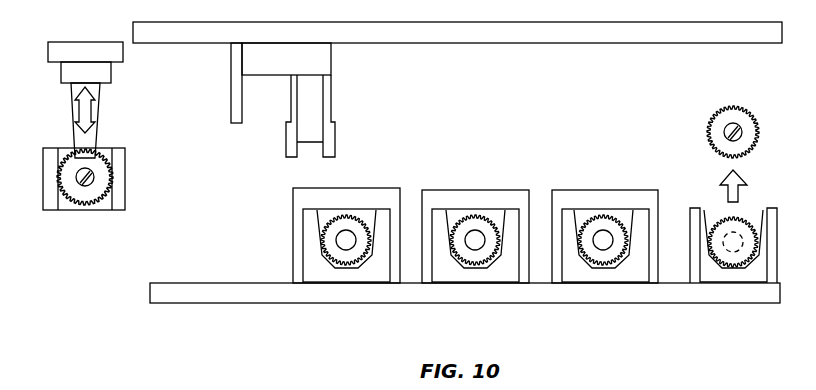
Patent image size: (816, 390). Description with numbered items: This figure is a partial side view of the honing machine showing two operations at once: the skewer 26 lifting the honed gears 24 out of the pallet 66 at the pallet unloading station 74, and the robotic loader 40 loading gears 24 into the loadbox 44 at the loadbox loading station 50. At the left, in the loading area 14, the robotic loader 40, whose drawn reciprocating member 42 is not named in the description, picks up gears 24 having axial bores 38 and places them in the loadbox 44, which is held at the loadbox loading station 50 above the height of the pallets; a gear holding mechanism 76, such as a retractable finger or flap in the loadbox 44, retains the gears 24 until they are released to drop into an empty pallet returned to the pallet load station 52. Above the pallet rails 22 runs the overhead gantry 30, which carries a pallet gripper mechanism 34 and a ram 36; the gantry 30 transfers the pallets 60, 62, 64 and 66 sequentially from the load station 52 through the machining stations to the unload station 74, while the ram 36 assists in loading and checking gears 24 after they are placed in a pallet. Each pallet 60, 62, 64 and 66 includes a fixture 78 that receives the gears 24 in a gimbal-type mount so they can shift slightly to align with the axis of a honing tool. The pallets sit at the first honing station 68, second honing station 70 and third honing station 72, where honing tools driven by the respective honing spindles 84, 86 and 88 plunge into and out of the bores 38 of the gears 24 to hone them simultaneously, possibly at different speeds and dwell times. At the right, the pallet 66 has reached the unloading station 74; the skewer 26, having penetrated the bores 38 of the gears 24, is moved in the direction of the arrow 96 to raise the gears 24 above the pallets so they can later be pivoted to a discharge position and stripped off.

The loading area 14 is at (330, 243).
The pallet rails 22 is at (773, 296).
The gears 24 is at (100, 179).
The skewer 26 is at (730, 130).
The overhead gantry 30 is at (310, 58).
The pallet gripper mechanism 34 is at (328, 137).
The ram 36 is at (231, 108).
The axial bores 38 is at (82, 178).
The robotic loader 40 is at (98, 73).
The reciprocating shaft 42 is at (86, 136).
The loadbox 44 is at (127, 160).
The loadbox loading station 50 is at (101, 263).
The pallet load station 52 is at (240, 337).
The pallet 60 is at (333, 244).
The pallet 62 is at (475, 240).
The pallet 64 is at (618, 240).
The pallet 66 is at (765, 277).
The first honing station 68 is at (361, 337).
The second honing station 70 is at (498, 337).
The third honing station 72 is at (626, 337).
The pallet unloading station 74 is at (746, 337).
The gear holding mechanism 76 is at (58, 184).
The fixture 78 is at (317, 217).
The honing spindle 84 is at (377, 188).
The honing spindle 86 is at (512, 190).
The honing spindle 88 is at (613, 190).
The arrow 96 is at (737, 190).